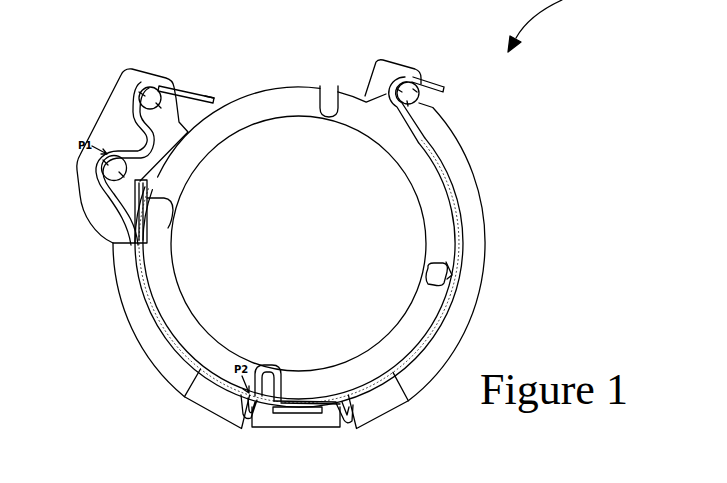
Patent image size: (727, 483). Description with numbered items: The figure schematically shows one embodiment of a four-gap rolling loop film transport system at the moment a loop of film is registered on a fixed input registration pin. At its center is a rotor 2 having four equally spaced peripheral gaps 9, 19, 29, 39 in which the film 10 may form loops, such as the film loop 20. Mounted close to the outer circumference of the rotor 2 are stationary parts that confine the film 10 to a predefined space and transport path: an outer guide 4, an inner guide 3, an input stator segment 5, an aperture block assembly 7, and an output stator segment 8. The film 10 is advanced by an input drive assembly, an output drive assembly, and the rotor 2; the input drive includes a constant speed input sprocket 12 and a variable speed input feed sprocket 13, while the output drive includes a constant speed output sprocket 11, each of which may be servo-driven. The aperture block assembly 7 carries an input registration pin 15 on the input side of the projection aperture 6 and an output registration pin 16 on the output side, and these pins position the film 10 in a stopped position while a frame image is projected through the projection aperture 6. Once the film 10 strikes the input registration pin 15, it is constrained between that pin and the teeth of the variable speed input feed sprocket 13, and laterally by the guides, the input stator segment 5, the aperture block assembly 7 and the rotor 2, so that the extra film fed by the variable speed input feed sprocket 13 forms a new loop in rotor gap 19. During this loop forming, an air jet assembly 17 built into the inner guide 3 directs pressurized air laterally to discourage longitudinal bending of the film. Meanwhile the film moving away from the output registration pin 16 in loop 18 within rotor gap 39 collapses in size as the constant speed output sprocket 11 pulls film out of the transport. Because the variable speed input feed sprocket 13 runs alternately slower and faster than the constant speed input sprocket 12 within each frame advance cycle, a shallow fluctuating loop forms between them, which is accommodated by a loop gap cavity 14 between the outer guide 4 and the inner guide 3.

The rotor 2 is at (276, 88).
The inner guide 3 is at (176, 100).
The outer guide 4 is at (108, 222).
The input stator segment 5 is at (150, 337).
The projection aperture 6 is at (305, 408).
The aperture block assembly 7 is at (277, 416).
The output stator segment 8 is at (475, 258).
The peripheral gap 9 is at (334, 98).
The film 10 is at (220, 86).
The constant speed output sprocket 11 is at (417, 102).
The constant speed input sprocket 12 is at (151, 90).
The variable speed input feed sprocket 13 is at (97, 163).
The loop gap cavity 14 is at (136, 135).
The input registration pin 15 is at (254, 396).
The output registration pin 16 is at (350, 407).
The air jet assembly 17 is at (148, 184).
The loop 18 is at (448, 268).
The peripheral gap 19 is at (172, 214).
The film loop 20 is at (280, 397).
The peripheral gap 29 is at (270, 378).
The peripheral gap 39 is at (428, 279).